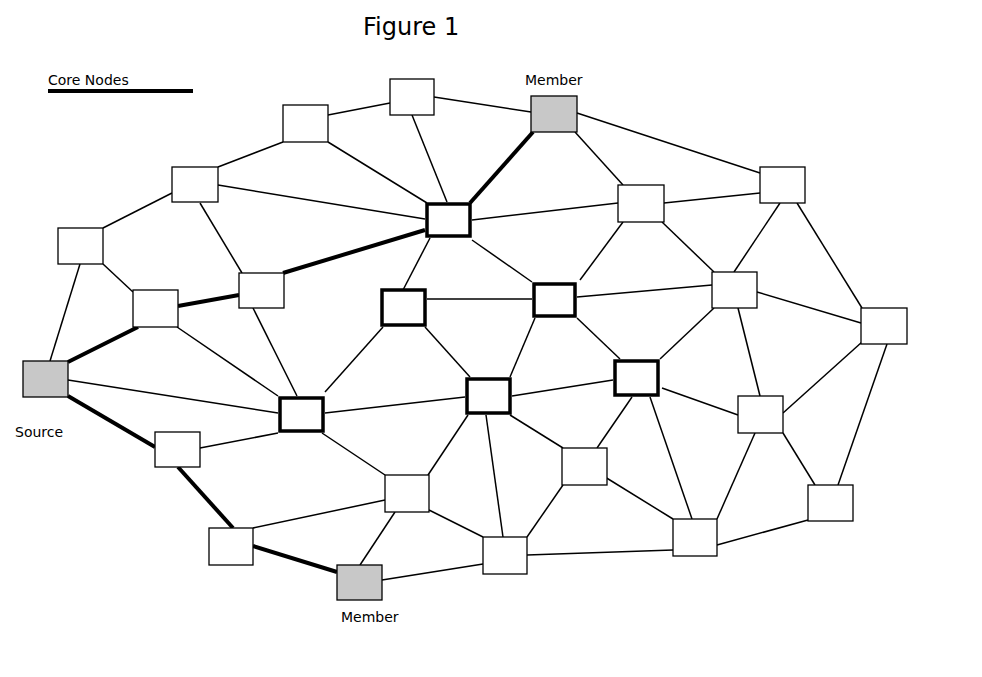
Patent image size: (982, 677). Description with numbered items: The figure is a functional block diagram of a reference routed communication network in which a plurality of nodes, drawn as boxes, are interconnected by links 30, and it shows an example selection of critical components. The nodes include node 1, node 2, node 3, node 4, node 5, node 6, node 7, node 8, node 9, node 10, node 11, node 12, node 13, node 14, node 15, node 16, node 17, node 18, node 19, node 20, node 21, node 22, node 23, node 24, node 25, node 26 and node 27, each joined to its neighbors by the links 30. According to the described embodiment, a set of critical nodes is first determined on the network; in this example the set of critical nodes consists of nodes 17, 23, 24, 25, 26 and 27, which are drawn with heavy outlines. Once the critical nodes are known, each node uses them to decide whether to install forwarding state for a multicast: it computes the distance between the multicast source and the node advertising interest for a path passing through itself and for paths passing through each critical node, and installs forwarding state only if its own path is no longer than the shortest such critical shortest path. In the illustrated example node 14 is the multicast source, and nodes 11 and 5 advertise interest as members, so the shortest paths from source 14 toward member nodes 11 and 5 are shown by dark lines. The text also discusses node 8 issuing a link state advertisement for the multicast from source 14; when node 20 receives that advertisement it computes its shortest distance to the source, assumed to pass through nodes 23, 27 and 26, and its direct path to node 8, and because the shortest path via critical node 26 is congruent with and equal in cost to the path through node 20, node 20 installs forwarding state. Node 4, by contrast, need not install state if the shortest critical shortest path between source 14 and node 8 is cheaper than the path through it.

The node 1 is at (80, 246).
The node 2 is at (195, 184).
The node 3 is at (305, 123).
The node 4 is at (412, 97).
The node 5 is at (554, 114).
The node 6 is at (782, 185).
The node 7 is at (884, 326).
The node 8 is at (830, 503).
The node 9 is at (695, 537).
The node 10 is at (505, 555).
The node 11 is at (359, 582).
The node 12 is at (231, 546).
The node 13 is at (177, 449).
The source node 14 is at (45, 379).
The node 15 is at (155, 308).
The node 16 is at (261, 290).
The critical node 17 is at (448, 220).
The node 18 is at (641, 203).
The node 19 is at (734, 290).
The node 20 is at (760, 414).
The node 21 is at (584, 466).
The node 22 is at (407, 493).
The critical node 23 is at (301, 414).
The critical node 24 is at (403, 307).
The critical node 25 is at (554, 300).
The critical node 26 is at (636, 378).
The critical node 27 is at (488, 396).
The links 30 is at (636, 124).